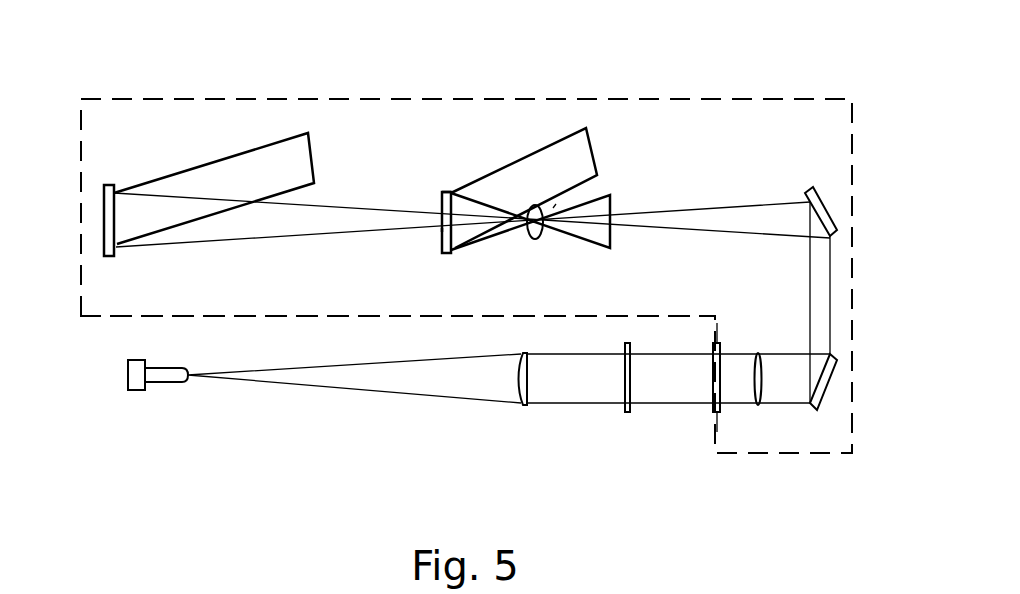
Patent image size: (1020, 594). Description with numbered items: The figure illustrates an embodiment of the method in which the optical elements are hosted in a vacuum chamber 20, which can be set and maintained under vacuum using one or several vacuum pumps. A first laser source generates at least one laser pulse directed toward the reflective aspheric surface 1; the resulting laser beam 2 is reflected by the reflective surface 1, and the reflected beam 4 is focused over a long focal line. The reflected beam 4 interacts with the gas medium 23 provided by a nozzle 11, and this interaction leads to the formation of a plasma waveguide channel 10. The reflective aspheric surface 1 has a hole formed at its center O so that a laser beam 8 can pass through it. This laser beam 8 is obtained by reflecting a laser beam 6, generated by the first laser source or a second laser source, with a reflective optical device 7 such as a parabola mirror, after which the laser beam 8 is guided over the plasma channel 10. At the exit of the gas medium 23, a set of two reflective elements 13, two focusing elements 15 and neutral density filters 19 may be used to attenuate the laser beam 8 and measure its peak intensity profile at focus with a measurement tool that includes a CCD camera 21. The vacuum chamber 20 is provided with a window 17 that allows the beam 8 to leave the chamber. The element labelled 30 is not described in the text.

The vacuum chamber 20 is at (140, 99).
The nozzle 11 is at (532, 240).
The reflective optical device 7 is at (104, 236).
The laser beam 6 is at (271, 172).
The laser beam 8 is at (753, 220).
The entrance slit 30 is at (438, 218).
The reflective aspheric surface 1 is at (441, 192).
The center O is at (441, 228).
The laser beam 2 is at (500, 200).
The reflected beam 4 is at (606, 208).
The plasma waveguide channel 10 is at (533, 206).
The gas medium 23 is at (553, 208).
The reflective elements 13 is at (817, 190).
The CCD camera 21 is at (163, 385).
The focusing elements 15 is at (517, 395).
The neutral density filters 19 is at (625, 392).
The window 17 is at (712, 395).